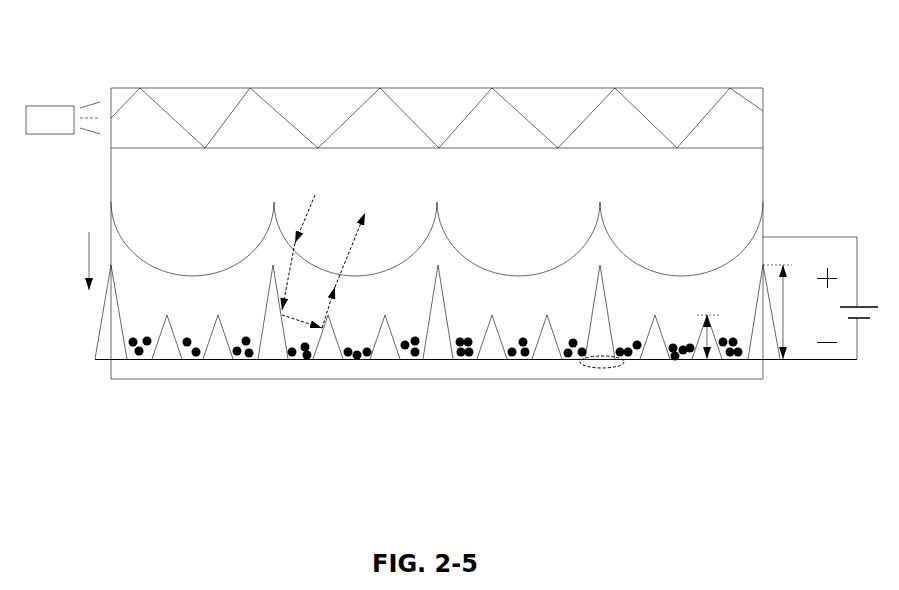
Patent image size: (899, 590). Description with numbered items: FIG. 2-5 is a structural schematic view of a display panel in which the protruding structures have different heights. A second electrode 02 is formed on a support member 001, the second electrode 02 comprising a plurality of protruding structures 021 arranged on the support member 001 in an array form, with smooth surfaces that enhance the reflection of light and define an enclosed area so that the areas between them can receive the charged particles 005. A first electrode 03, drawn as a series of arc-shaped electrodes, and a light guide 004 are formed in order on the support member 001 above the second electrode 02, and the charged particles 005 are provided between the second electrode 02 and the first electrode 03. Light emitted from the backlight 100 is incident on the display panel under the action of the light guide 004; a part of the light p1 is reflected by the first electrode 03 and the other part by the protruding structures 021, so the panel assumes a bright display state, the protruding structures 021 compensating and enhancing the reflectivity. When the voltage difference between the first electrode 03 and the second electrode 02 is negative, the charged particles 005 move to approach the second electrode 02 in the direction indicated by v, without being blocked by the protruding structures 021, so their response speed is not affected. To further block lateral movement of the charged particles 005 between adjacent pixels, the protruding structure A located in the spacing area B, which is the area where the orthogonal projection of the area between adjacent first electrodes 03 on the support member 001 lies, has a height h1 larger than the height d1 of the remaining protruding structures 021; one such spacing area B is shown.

The backlight 100 is at (43, 106).
The light guide 004 is at (548, 88).
The first electrode 03 is at (632, 252).
The support member 001 is at (660, 380).
The second electrode 02 is at (425, 388).
The protruding structures 021 is at (330, 352).
The charged particles 005 is at (304, 357).
The protruding structure located in a spacing area A is at (110, 350).
The spacing area B is at (608, 371).
The height of the protruding structure in the spacing area h1 is at (783, 312).
The height of the remaining protruding structures d1 is at (716, 336).
The direction of movement of the charged particles v is at (81, 261).
The light p1 is at (323, 261).